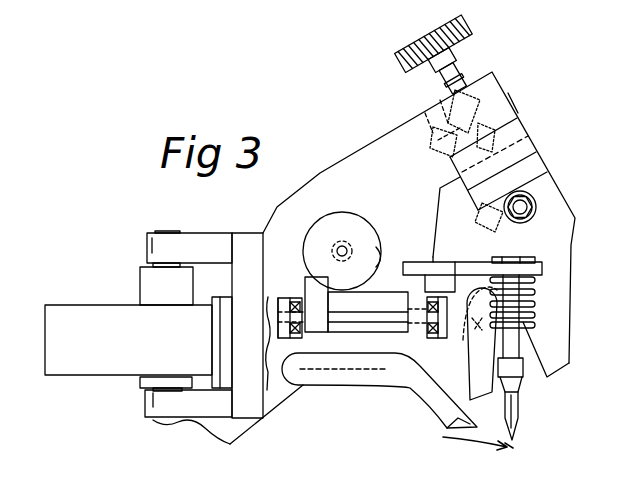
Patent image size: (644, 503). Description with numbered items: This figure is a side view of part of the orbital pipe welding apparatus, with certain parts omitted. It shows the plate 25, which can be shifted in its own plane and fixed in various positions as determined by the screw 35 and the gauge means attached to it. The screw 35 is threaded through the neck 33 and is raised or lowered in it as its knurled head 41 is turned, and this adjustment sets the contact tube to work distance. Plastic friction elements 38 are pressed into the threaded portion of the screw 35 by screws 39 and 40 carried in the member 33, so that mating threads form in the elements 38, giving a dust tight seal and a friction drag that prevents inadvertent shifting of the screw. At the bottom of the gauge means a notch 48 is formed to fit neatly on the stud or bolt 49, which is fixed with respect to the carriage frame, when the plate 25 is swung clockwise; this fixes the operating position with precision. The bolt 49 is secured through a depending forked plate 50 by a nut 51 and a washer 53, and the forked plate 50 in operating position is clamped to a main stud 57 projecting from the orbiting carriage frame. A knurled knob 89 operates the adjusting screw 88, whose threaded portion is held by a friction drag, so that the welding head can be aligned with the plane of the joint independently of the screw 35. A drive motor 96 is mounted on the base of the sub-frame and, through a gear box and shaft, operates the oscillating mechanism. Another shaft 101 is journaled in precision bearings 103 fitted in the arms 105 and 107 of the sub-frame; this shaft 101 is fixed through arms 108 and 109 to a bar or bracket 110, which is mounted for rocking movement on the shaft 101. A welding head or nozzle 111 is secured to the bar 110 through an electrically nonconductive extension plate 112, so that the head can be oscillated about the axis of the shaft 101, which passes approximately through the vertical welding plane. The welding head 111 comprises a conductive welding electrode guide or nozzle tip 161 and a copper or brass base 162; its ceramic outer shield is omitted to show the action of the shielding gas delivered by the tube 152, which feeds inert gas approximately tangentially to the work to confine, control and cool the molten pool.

The plate 25 is at (281, 406).
The neck 33 is at (409, 124).
The screw 35 is at (460, 72).
The plastic friction elements 38 is at (510, 83).
The screw 39 is at (518, 110).
The screw 40 is at (455, 150).
The knurled head 41 is at (468, 26).
The notch 48 is at (515, 221).
The stud or bolt 49 is at (540, 192).
The depending forked plate 50 is at (574, 250).
The nut 51 is at (543, 212).
The washer 53 is at (538, 168).
The main stud 57 is at (470, 296).
The adjusting screw 88 is at (350, 245).
The knurled knob 89 is at (323, 212).
The drive motor 96 is at (72, 368).
The shaft 101 is at (374, 322).
The precision bearings 103 is at (282, 333).
The bracket or arm 105 is at (280, 297).
The bracket or arm 107 is at (408, 383).
The arm 108 is at (327, 297).
The arm 109 is at (408, 304).
The bar or bracket 110 is at (389, 270).
The welding head or nozzle 111 is at (550, 306).
The electrically nonconductive extension plate 112 is at (481, 248).
The tube or nozzle 152 is at (447, 430).
The welding electrode guide 161 is at (522, 405).
The base 162 is at (537, 328).